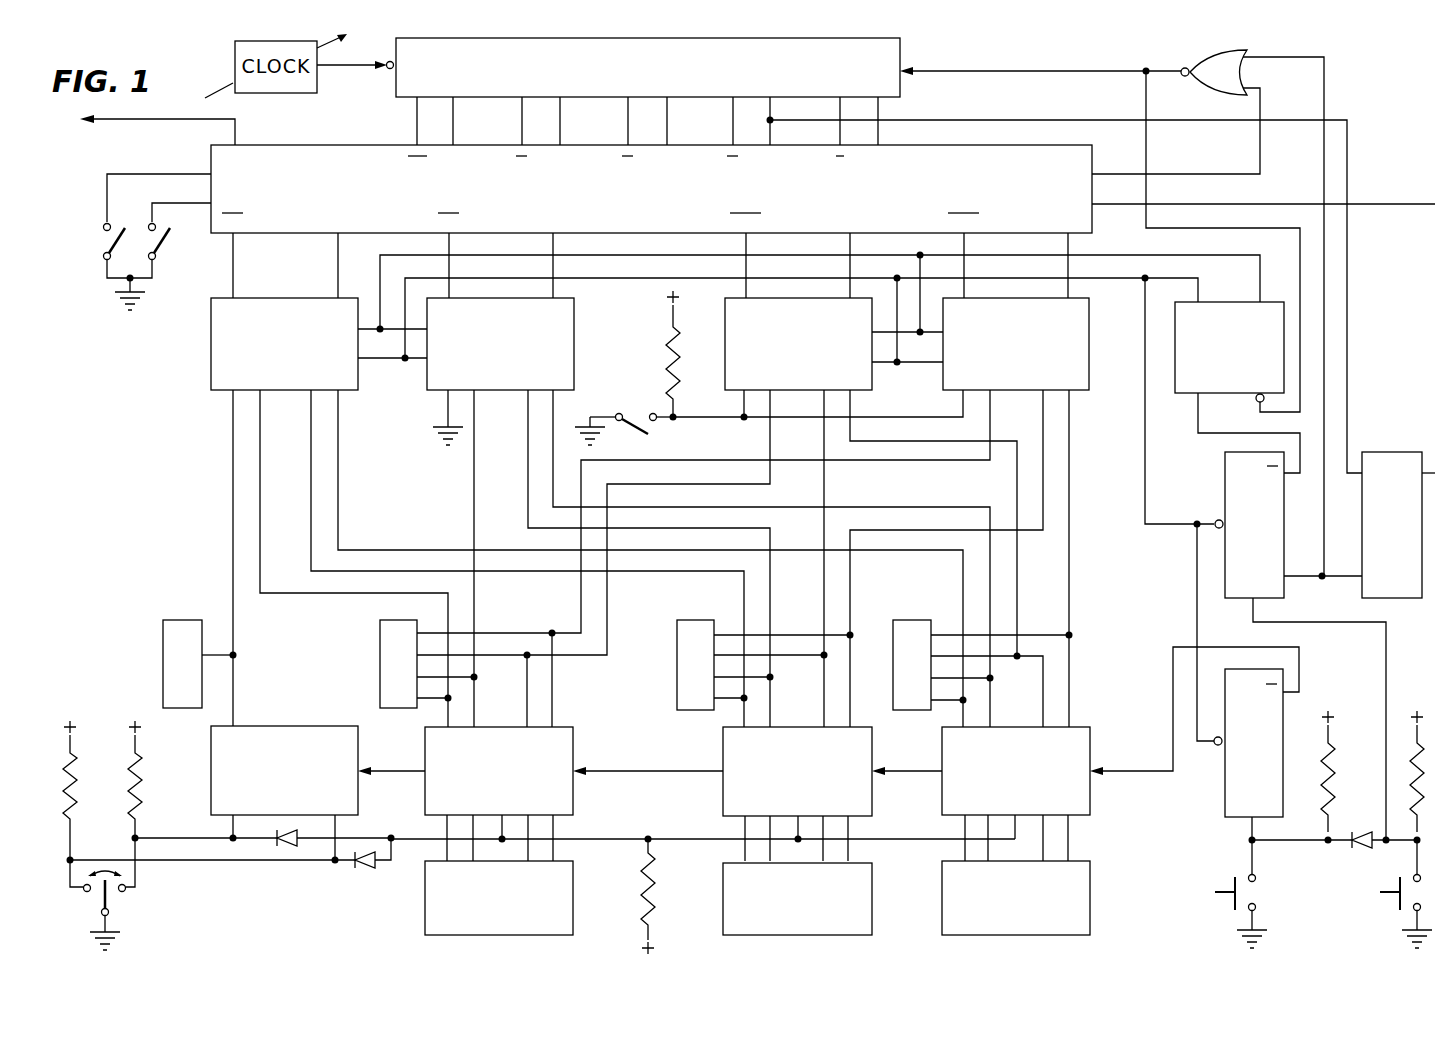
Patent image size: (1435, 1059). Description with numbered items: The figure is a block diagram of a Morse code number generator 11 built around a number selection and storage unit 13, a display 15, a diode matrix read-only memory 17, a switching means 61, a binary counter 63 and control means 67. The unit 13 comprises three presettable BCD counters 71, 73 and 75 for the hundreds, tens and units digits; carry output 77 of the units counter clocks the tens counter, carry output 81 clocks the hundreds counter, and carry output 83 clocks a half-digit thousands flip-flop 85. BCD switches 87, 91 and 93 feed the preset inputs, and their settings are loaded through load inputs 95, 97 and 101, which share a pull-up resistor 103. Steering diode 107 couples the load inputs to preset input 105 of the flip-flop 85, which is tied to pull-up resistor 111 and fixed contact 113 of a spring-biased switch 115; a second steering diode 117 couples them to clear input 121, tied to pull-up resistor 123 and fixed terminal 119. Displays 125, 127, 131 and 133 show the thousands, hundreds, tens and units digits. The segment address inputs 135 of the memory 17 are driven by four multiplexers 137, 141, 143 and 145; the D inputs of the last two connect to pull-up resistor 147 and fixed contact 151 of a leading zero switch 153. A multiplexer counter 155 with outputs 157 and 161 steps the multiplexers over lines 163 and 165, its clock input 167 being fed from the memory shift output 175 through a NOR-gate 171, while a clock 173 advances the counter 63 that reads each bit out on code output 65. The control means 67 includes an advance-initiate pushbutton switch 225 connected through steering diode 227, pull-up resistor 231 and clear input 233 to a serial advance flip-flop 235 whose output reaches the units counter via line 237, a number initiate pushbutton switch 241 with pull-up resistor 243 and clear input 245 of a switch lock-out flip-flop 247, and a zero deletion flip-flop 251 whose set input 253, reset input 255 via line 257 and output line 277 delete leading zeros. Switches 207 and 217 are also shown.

The number generator 11 is at (1385, 135).
The number selection and storage unit 13 is at (398, 908).
The display 15 is at (160, 617).
The read-only memory 17 is at (320, 145).
The switching means 61 is at (207, 339).
The binary counter 63 is at (393, 90).
The code output line 65 is at (235, 128).
The control means 67 is at (1188, 551).
The 100's digit counter 71 is at (573, 737).
The 10's digit counter 73 is at (872, 735).
The 1's digit counter 75 is at (1090, 747).
The carry output 77 is at (940, 775).
The carry output 81 is at (722, 776).
The carry output 83 is at (420, 775).
The thousands flip-flop 85 is at (277, 726).
The BCD switch 87 is at (573, 907).
The BCD switch 91 is at (872, 907).
The BCD switch 93 is at (1090, 903).
The load input 95 is at (507, 819).
The load input 97 is at (803, 820).
The load input 101 is at (1017, 822).
The pull-up resistor 103 is at (703, 895).
The preset input 105 is at (340, 818).
The steering diode 107 is at (366, 868).
The pull-up resistor 111 is at (78, 790).
The fixed contact 113 is at (83, 893).
The single pole double throw switch 115 is at (118, 905).
The second steering diode 117 is at (290, 847).
The fixed terminal 119 is at (126, 892).
The clear input 121 is at (230, 822).
The pull-up resistor 123 is at (131, 775).
The thousands display 125 is at (163, 665).
The 100's digit display 127 is at (378, 660).
The 10's digit display 131 is at (677, 668).
The units display 133 is at (893, 672).
The segment address inputs 135 is at (320, 242).
The multiplexer 137 is at (270, 298).
The multiplexer 141 is at (575, 342).
The multiplexer 143 is at (724, 334).
The multiplexer 145 is at (1090, 338).
The pull-up resistor 147 is at (668, 356).
The fixed contact 151 is at (654, 421).
The single pole single throw switch 153 is at (646, 416).
The multiplexer counter 155 is at (1236, 301).
The binary level output 157 is at (1262, 302).
The binary level output 161 is at (1198, 302).
The line 163 is at (392, 260).
The line 165 is at (384, 360).
The clock input 167 is at (1255, 403).
The NOR-gate 171 is at (1205, 52).
The clock 173 is at (318, 70).
The shift output 175 is at (1092, 172).
The N switch 207 is at (156, 255).
The O switch 217 is at (103, 255).
The advance-initiate pushbutton switch 225 is at (1232, 894).
The steering diode 227 is at (1356, 850).
The pull-up resistor 231 is at (1351, 771).
The clear input 233 is at (1248, 822).
The serial advance flip-flop 235 is at (1223, 772).
The line 237 is at (1173, 712).
The number initiate pushbutton switch 241 is at (1396, 894).
The pull-up resistor 243 is at (1414, 770).
The clear input 245 is at (1253, 605).
The switch lock-out flip-flop 247 is at (1225, 488).
The zero deletion flip-flop 251 is at (1400, 450).
The set input 253 is at (1362, 581).
The reset input 255 is at (1357, 470).
The line 257 is at (1324, 96).
The line 277 is at (1402, 203).